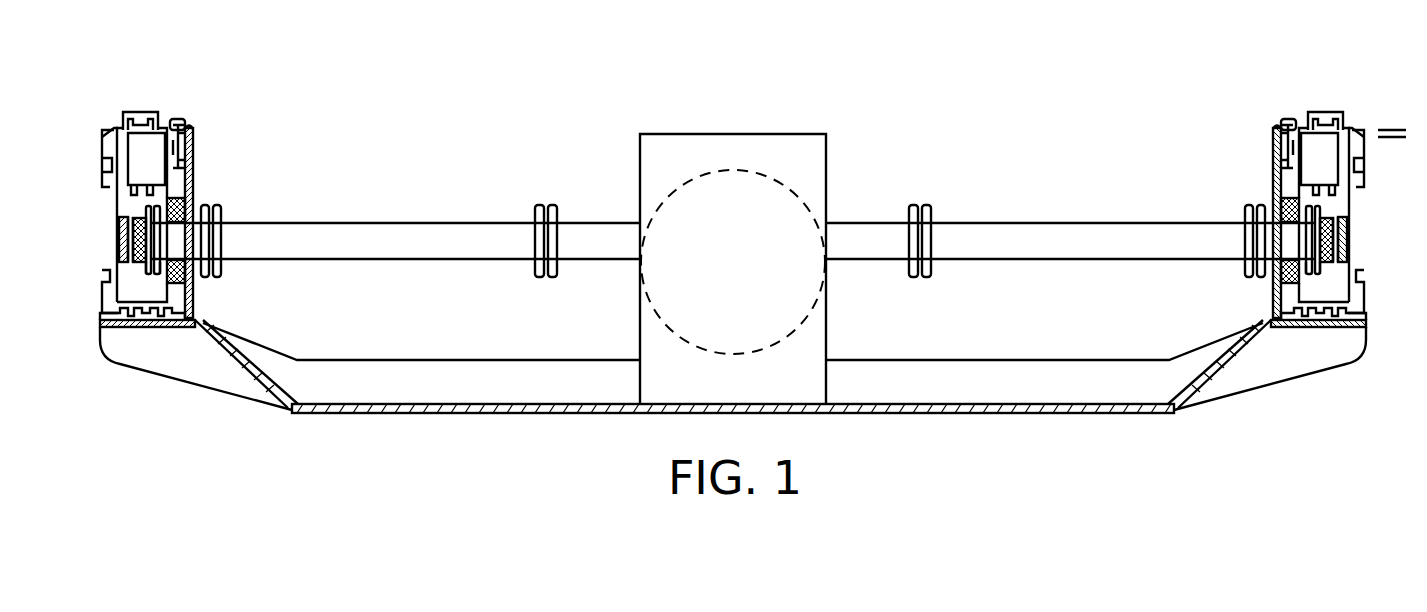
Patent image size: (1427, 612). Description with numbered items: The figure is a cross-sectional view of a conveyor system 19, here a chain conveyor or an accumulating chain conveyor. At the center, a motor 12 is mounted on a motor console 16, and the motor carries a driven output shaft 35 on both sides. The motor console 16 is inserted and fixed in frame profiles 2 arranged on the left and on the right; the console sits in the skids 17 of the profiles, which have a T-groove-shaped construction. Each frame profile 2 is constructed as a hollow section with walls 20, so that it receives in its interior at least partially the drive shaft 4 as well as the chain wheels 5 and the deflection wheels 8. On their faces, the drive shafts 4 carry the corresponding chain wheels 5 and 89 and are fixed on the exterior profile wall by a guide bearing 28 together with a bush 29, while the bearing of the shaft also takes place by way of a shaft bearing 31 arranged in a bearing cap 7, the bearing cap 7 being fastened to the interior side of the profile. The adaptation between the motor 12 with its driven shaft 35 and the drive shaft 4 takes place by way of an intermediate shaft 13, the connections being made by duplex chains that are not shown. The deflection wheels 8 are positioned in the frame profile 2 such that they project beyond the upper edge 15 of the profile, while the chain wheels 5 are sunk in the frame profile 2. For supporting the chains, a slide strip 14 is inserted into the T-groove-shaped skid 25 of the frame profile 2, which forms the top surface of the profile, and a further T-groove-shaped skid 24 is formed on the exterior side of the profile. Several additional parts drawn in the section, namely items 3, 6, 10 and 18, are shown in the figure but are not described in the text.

The frame profile 2 is at (188, 127).
The seal ring 3 is at (120, 242).
The drive shaft 4 is at (196, 232).
The chain wheel 5 is at (134, 212).
The end frame housing 6 is at (208, 146).
The bearing cap 7 is at (186, 140).
The deflection wheel 8 is at (141, 150).
The top bracket 10 is at (150, 112).
The motor 12 is at (681, 152).
The intermediate shaft 13 is at (360, 240).
The slide strip 14 is at (756, 89).
The skid 25 is at (180, 122).
The upper edge of the profile 15 is at (112, 127).
The motor console 16 is at (513, 393).
The skid 17 is at (156, 330).
The spacer 18 is at (190, 130).
The assembly 19 is at (695, 44).
The wall 20 is at (138, 166).
The skid 24 is at (104, 142).
The guide bearing 28 is at (141, 278).
The bush 29 is at (120, 250).
The shaft bearing 31 is at (190, 279).
The driven output shaft 35 is at (611, 240).
The chain wheel 89 is at (186, 210).